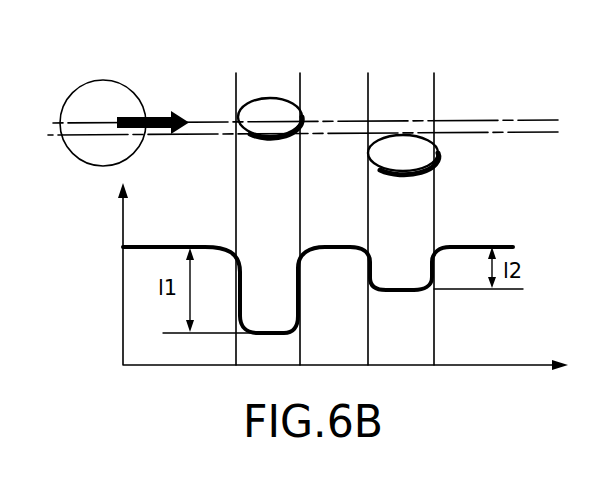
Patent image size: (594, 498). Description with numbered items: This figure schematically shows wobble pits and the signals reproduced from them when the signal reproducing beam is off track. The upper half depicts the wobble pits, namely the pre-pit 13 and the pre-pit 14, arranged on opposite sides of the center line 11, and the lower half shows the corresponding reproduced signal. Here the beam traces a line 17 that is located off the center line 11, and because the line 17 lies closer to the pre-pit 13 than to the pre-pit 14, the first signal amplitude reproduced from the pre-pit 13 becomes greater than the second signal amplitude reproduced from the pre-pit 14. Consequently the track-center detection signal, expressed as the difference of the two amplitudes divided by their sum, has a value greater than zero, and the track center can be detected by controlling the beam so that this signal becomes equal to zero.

The center line 11 is at (515, 136).
The pre-pit 13 is at (269, 97).
The pre-pit 14 is at (401, 173).
The line 17 is at (476, 118).